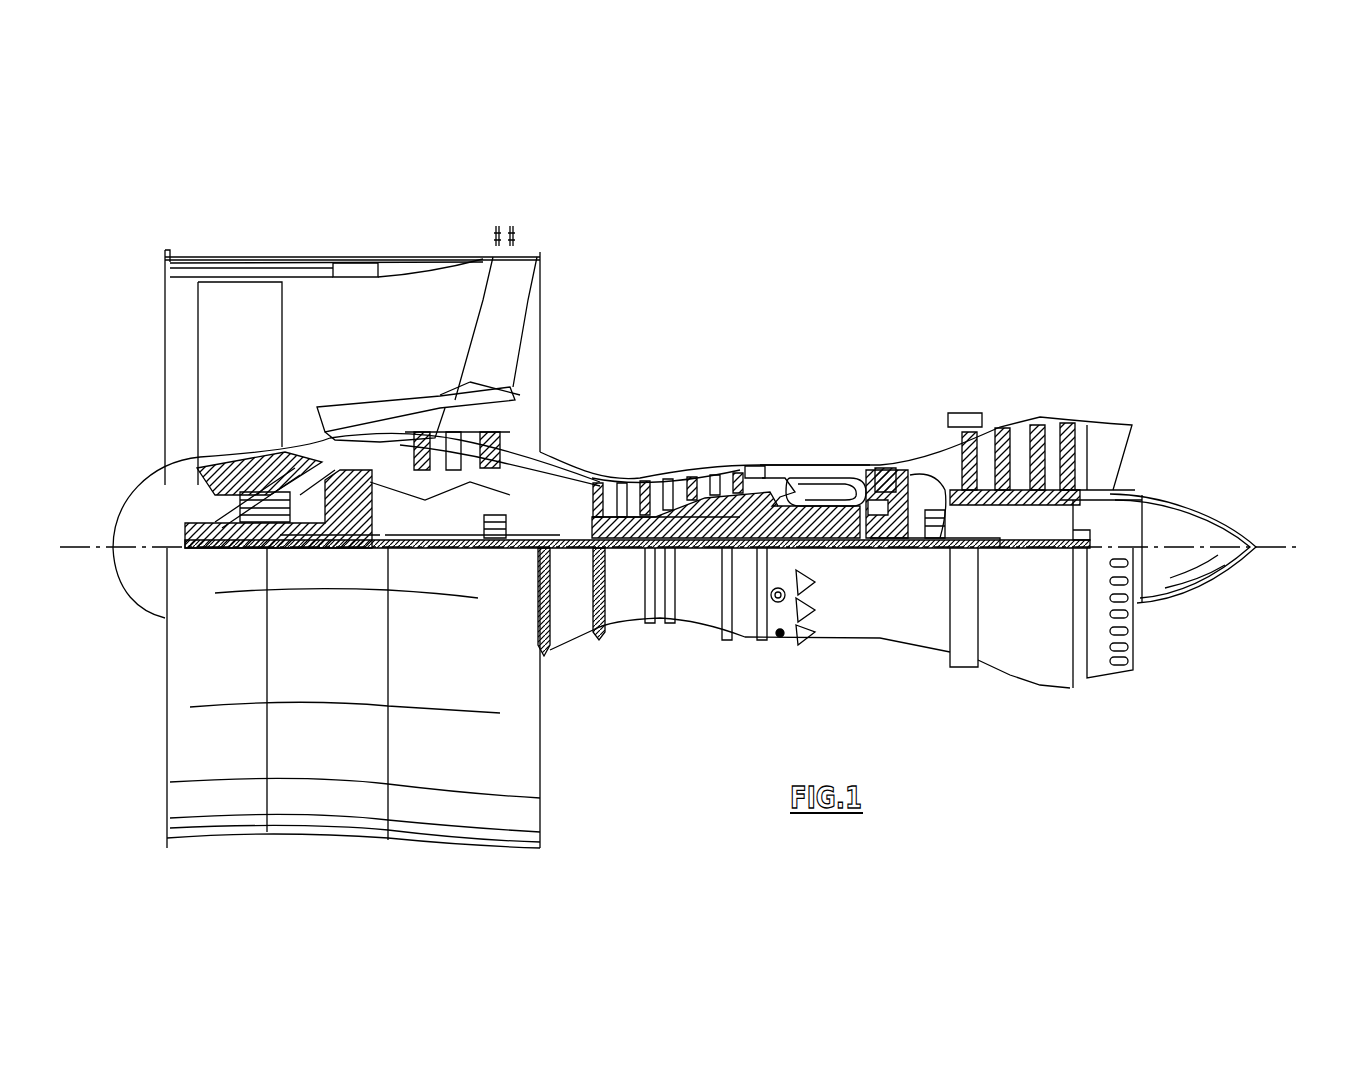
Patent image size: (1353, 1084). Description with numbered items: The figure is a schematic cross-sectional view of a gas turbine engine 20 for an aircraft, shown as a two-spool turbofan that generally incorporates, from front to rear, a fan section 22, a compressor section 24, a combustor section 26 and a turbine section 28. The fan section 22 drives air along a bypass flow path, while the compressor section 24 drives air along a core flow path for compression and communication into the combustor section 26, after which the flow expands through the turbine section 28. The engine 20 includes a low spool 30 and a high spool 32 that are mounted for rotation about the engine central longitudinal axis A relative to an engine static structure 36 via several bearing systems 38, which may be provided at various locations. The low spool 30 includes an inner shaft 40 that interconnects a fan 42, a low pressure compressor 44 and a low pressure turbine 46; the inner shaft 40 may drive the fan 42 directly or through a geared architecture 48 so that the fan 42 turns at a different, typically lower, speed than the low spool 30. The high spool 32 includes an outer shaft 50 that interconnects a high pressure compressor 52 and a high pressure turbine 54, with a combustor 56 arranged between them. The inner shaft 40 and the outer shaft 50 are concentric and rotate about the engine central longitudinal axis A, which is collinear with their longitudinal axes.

The gas turbine engine 20 is at (838, 300).
The fan section 22 is at (270, 251).
The compressor section 24 is at (588, 460).
The combustor section 26 is at (817, 445).
The turbine section 28 is at (970, 405).
The low spool 30 is at (702, 550).
The high spool 32 is at (750, 475).
The engine static structure 36 is at (742, 640).
The bearing systems 38 is at (490, 540).
The inner shaft 40 is at (560, 550).
The fan 42 is at (250, 389).
The low pressure compressor 44 is at (515, 400).
The low pressure turbine 46 is at (1010, 425).
The geared architecture 48 is at (355, 535).
The outer shaft 50 is at (830, 548).
The high pressure compressor 52 is at (668, 480).
The high pressure turbine 54 is at (888, 470).
The combustor 56 is at (822, 487).
The engine central longitudinal axis A is at (1290, 547).